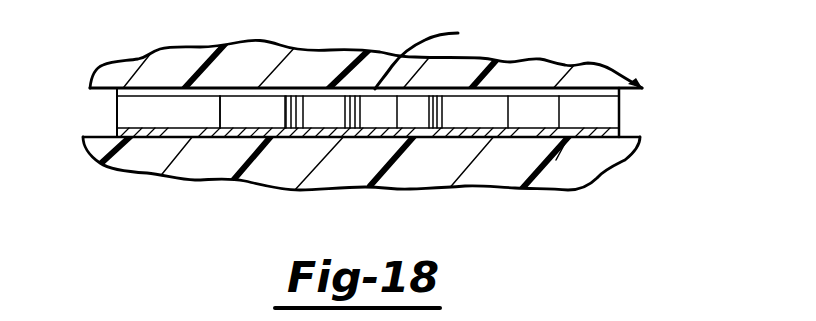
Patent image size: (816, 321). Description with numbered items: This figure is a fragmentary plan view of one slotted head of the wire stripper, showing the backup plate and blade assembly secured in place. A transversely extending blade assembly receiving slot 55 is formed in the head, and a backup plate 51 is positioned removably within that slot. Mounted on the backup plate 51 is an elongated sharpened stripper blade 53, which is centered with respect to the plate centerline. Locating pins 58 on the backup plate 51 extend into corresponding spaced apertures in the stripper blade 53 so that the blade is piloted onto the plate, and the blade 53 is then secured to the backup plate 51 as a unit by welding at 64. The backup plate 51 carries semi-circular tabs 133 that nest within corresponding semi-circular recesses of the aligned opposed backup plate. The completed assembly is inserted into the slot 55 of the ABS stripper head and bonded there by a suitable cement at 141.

The backup plate 51 is at (607, 113).
The stripper blade 53 is at (420, 133).
The blade assembly receiving slot 55 is at (166, 66).
The pin 58 is at (182, 135).
The weld 64 is at (528, 125).
The semi-circular tab 133 is at (273, 118).
The cement bond 141 is at (449, 53).